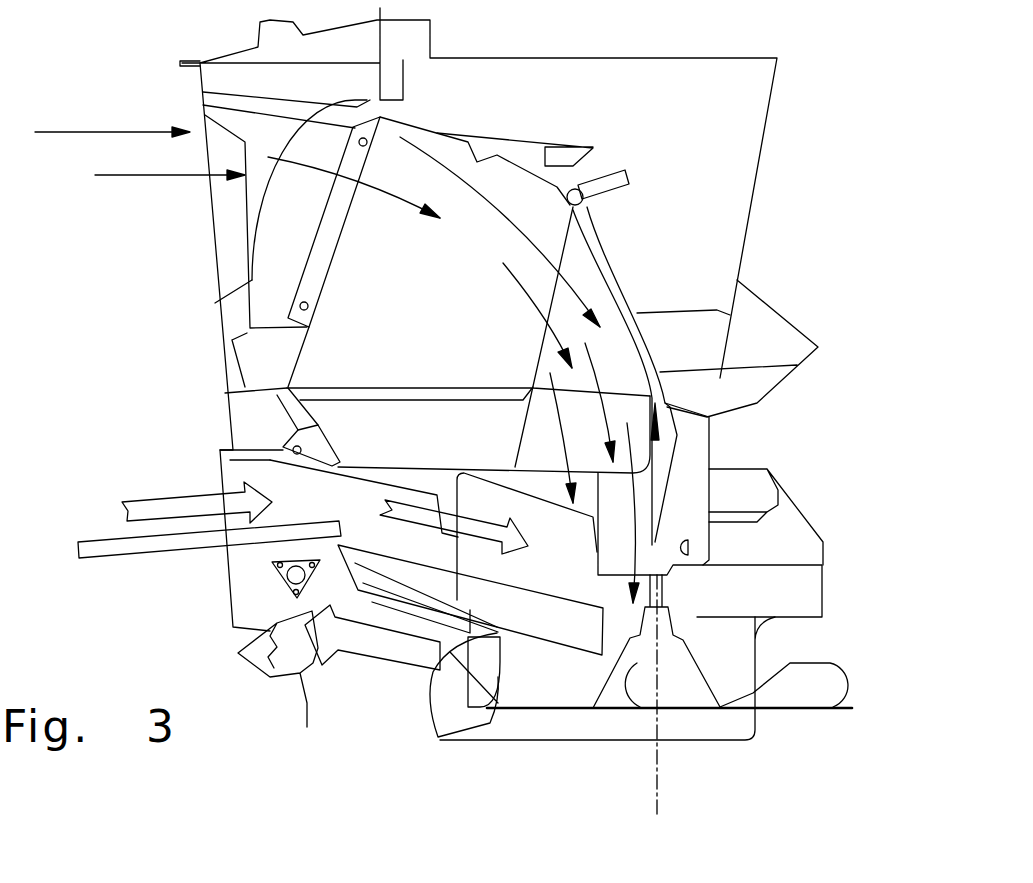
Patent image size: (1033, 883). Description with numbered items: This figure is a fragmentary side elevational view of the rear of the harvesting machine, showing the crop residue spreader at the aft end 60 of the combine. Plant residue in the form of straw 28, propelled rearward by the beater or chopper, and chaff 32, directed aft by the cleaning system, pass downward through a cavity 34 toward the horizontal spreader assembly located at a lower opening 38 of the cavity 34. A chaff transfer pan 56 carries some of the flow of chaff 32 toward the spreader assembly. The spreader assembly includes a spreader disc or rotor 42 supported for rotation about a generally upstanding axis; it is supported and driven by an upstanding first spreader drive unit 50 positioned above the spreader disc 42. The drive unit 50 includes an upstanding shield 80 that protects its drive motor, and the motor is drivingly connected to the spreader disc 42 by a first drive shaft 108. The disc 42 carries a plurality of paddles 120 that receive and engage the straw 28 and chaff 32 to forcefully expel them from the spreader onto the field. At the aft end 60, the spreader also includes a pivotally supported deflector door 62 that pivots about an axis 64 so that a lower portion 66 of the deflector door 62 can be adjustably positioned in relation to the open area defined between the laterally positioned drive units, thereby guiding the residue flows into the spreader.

The straw 28 is at (477, 263).
The chaff 32 is at (188, 495).
The cavity 34 is at (372, 248).
The lower opening 38 is at (592, 657).
The first spreader disc or rotor 42 is at (787, 710).
The first spreader drive unit 50 is at (722, 432).
The chaff transfer pan 56 is at (435, 672).
The aft end 60 is at (723, 197).
The deflector door 62 is at (617, 257).
The axis 64 is at (606, 168).
The lower portion 66 is at (664, 458).
The shield 80 is at (690, 547).
The first drive shaft 108 is at (665, 593).
The paddles 120 is at (807, 680).